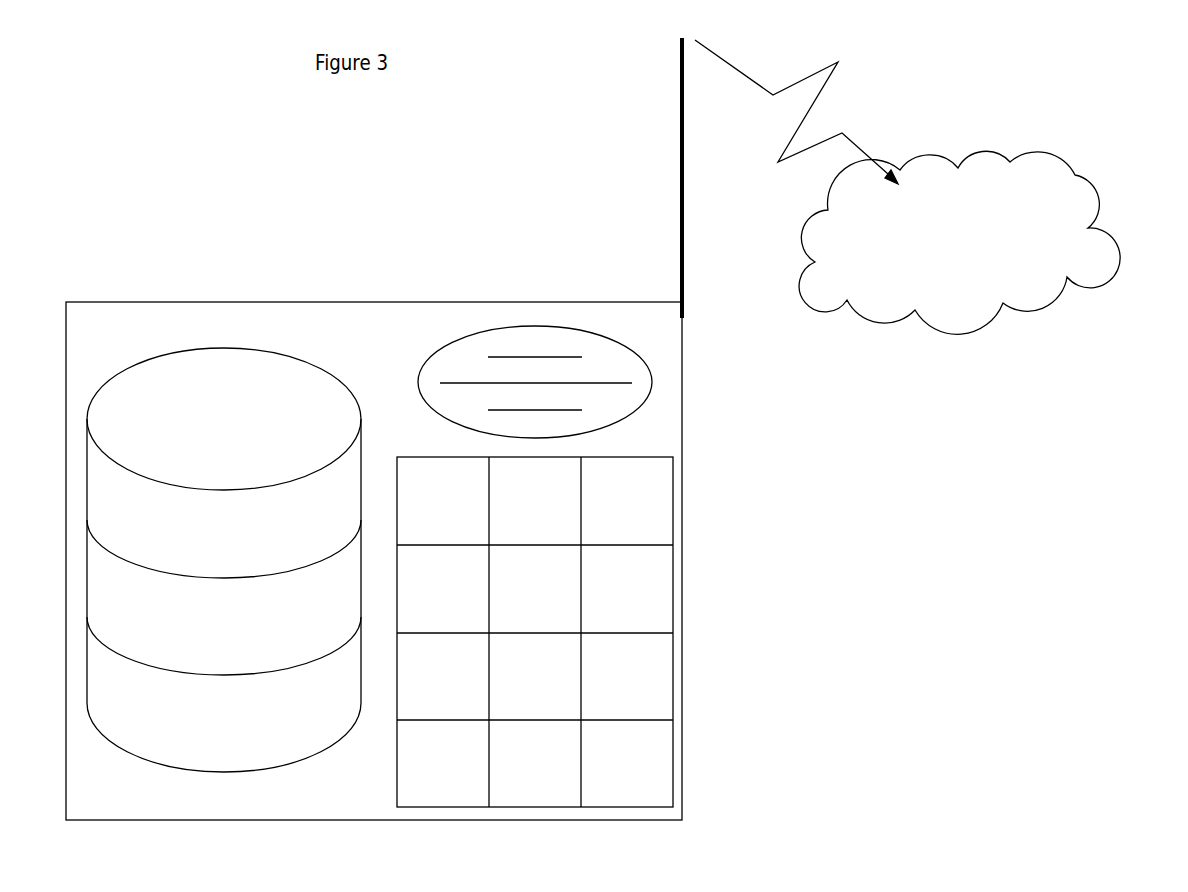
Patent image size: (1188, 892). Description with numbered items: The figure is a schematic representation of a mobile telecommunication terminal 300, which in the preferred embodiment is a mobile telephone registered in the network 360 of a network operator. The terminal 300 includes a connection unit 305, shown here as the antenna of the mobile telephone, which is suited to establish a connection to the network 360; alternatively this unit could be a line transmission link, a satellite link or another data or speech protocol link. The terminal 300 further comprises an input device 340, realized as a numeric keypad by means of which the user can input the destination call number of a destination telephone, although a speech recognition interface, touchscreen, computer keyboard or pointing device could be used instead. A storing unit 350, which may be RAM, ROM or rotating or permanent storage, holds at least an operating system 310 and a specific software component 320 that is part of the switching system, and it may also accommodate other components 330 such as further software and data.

The telecommunication terminal 300 is at (978, 70).
The connection unit 305 is at (673, 174).
The operating system 310 is at (224, 542).
The software component 320 is at (224, 635).
The other components 330 is at (224, 737).
The input device 340 is at (662, 657).
The storing unit 350 is at (224, 525).
The network 360 is at (959, 242).